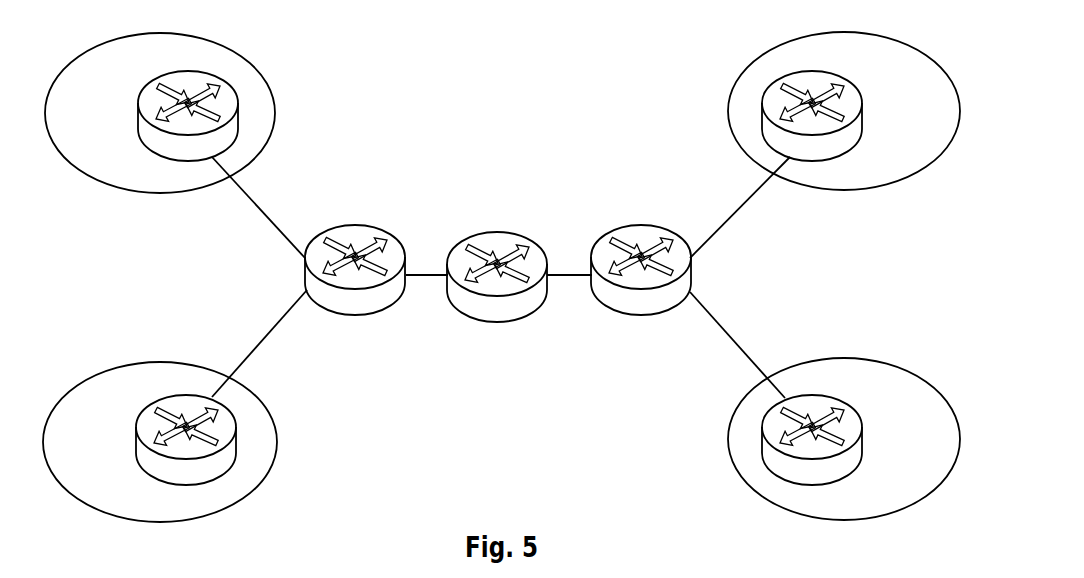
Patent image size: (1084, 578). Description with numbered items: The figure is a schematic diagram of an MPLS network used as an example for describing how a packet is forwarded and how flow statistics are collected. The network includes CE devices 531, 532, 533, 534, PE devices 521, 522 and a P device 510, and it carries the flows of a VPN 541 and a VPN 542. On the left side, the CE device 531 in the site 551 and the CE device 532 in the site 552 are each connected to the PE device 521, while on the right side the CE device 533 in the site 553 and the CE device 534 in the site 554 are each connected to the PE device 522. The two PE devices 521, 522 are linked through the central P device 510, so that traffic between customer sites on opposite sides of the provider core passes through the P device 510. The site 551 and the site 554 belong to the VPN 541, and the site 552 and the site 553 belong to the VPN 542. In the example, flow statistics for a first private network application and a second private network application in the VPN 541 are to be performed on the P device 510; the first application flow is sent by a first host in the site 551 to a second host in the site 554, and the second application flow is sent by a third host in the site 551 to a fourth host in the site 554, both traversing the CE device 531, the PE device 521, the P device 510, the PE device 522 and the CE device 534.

The P device 510 is at (497, 291).
The PE device 521 is at (355, 288).
The PE device 522 is at (641, 288).
The CE device 531 is at (174, 126).
The CE device 532 is at (185, 454).
The CE device 533 is at (832, 124).
The CE device 534 is at (820, 452).
The VPN 541 is at (500, 241).
The VPN 542 is at (501, 251).
The site 551 is at (187, 113).
The site 552 is at (197, 442).
The site 553 is at (814, 111).
The site 554 is at (814, 439).